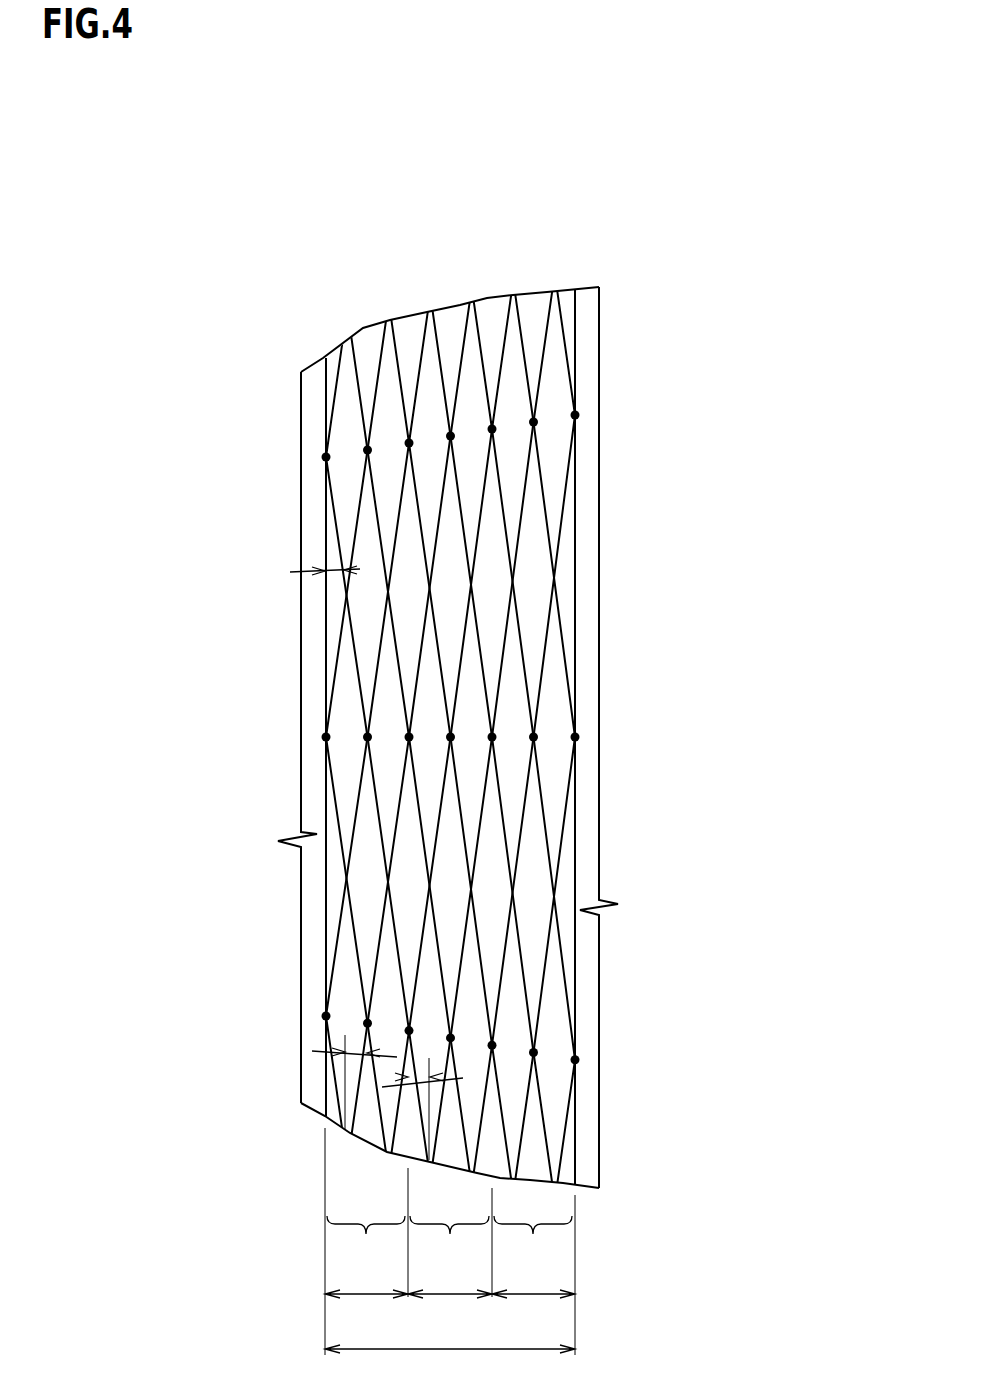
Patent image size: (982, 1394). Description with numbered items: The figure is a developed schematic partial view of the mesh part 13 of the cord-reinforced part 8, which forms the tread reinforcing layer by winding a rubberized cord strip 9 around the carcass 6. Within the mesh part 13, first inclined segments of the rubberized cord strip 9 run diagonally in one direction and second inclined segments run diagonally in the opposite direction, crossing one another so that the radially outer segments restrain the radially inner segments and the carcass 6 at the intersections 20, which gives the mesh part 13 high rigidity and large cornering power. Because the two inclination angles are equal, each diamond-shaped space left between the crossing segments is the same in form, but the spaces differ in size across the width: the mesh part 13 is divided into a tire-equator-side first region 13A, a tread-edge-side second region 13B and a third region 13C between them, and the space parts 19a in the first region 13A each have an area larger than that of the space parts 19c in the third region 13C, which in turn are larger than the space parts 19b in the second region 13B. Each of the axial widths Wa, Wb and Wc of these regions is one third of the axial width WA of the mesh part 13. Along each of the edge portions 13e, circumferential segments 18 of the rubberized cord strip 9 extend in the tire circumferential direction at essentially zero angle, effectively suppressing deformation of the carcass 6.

The cord-reinforced part 8 is at (451, 737).
The mesh part 13 is at (451, 737).
The rubberized cord strip 9 is at (451, 737).
The circumferential segments 18 is at (323, 622).
The intersections 20 is at (325, 456).
The space parts within the tire-equator-side first region 19a is at (512, 675).
The space parts within the tread-edge-side second region 19b is at (340, 763).
The space parts within the third region 19c is at (428, 668).
The carcass 6 is at (268, 1057).
The edge portions of the mesh part 13e is at (323, 1080).
The tire-equator-side first region 13A is at (533, 1241).
The tread-edge-side second region 13B is at (366, 1241).
The third region 13C is at (449, 1241).
The axial width of the first region Wa is at (533, 1309).
The axial width of the second region Wb is at (366, 1309).
The axial width of the third region Wc is at (450, 1309).
The axial width of the mesh part WA is at (450, 1364).